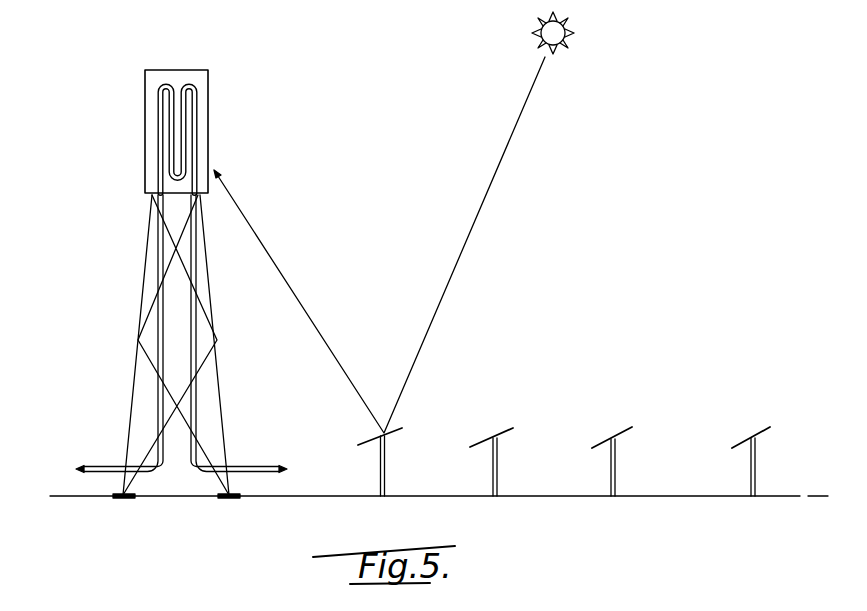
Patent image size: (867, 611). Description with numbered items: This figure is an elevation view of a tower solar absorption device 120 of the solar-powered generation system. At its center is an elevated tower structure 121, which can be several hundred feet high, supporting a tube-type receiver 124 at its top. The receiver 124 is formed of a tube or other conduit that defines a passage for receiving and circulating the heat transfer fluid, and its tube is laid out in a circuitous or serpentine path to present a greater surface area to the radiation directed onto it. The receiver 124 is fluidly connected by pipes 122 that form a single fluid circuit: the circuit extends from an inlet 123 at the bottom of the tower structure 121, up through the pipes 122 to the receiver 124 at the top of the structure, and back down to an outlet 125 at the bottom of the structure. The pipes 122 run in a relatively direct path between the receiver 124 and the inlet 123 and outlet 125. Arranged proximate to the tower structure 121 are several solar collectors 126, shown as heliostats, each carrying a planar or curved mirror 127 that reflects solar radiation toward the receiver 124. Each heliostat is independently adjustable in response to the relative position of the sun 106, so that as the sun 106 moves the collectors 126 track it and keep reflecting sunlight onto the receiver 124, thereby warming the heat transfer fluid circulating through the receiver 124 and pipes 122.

The sun 106 is at (566, 38).
The tower solar absorption device 120 is at (274, 178).
The tower structure 121 is at (145, 242).
The pipes 122 is at (160, 320).
The inlet 123 is at (289, 470).
The tube-type receiver 124 is at (196, 104).
The outlet 125 is at (78, 468).
The solar collector 126 is at (380, 424).
The mirror 127 is at (364, 442).